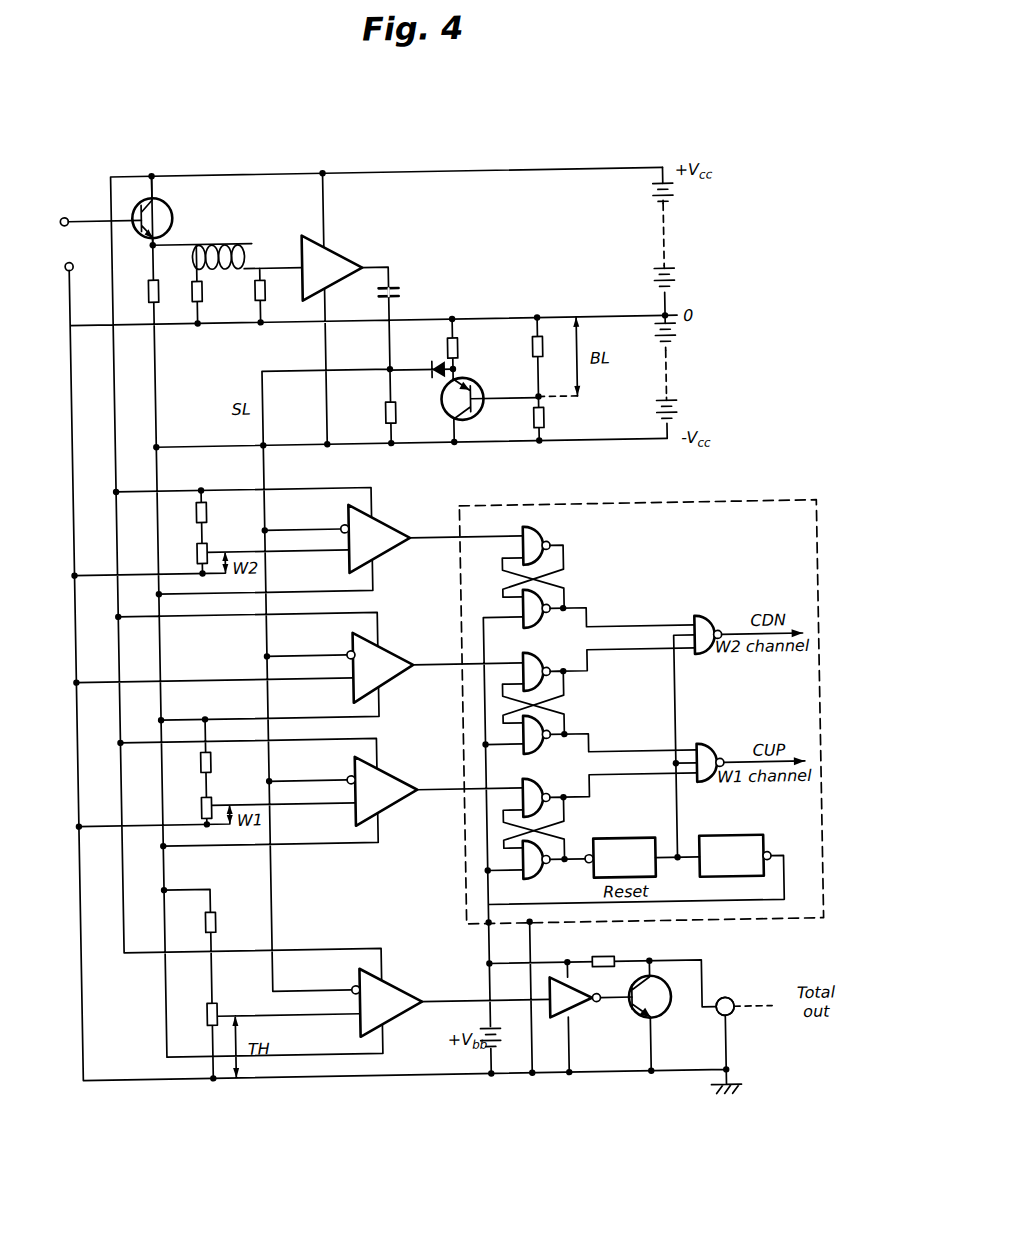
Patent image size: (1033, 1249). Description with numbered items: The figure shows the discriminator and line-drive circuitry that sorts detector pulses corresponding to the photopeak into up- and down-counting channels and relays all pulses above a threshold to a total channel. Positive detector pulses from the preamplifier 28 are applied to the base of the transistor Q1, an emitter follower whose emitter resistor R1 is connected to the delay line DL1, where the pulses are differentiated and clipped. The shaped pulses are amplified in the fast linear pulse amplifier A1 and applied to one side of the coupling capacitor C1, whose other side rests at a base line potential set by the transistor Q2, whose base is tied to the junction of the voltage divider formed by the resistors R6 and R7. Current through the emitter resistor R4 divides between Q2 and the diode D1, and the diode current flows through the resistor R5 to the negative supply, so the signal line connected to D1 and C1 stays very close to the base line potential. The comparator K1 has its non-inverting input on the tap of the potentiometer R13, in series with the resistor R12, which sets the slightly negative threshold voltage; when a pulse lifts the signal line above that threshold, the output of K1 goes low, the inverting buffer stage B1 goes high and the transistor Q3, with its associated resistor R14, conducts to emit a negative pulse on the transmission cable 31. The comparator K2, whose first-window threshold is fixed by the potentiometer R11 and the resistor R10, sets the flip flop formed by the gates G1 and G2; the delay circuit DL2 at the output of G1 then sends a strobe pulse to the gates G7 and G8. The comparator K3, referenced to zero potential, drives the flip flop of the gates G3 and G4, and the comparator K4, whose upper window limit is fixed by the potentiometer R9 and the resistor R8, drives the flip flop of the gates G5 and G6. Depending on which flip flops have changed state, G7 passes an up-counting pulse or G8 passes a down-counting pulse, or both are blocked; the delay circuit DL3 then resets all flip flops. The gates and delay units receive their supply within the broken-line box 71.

The preamplifier 28 is at (98, 245).
The transistor Q1 is at (165, 210).
The emitter resistor R1 is at (140, 293).
The delay line DL1 is at (227, 274).
The linear pulse amplifier A1 is at (332, 268).
The coupling capacitor C1 is at (402, 295).
The diode D1 is at (421, 363).
The emitter resistor R4 is at (464, 349).
The resistor R5 is at (404, 413).
The transistor Q2 is at (490, 394).
The resistor R6 is at (549, 347).
The resistor R7 is at (553, 419).
The resistor R8 is at (187, 514).
The potentiometer R9 is at (188, 555).
The differential comparator K4 is at (375, 537).
The differential comparator K3 is at (380, 666).
The resistor R10 is at (190, 764).
The potentiometer R11 is at (190, 808).
The differential comparator K2 is at (382, 791).
The resistor R12 is at (229, 923).
The potentiometer R13 is at (196, 1014).
The differential comparator K1 is at (386, 1002).
The gate G6 is at (535, 556).
The gate G5 is at (598, 595).
The gate G4 is at (599, 681).
The gate G3 is at (599, 723).
The gate G2 is at (600, 807).
The gate G1 is at (544, 850).
The gate G8 is at (748, 625).
The gate G7 is at (750, 755).
The delay circuit DL2 is at (620, 846).
The delay circuit DL3 is at (735, 844).
The broken-line box 71 is at (464, 828).
The resistor R14 is at (610, 951).
The inverting buffer stage B1 is at (591, 1016).
The transistor Q3 is at (659, 1015).
The transmission cable 31 is at (736, 1007).